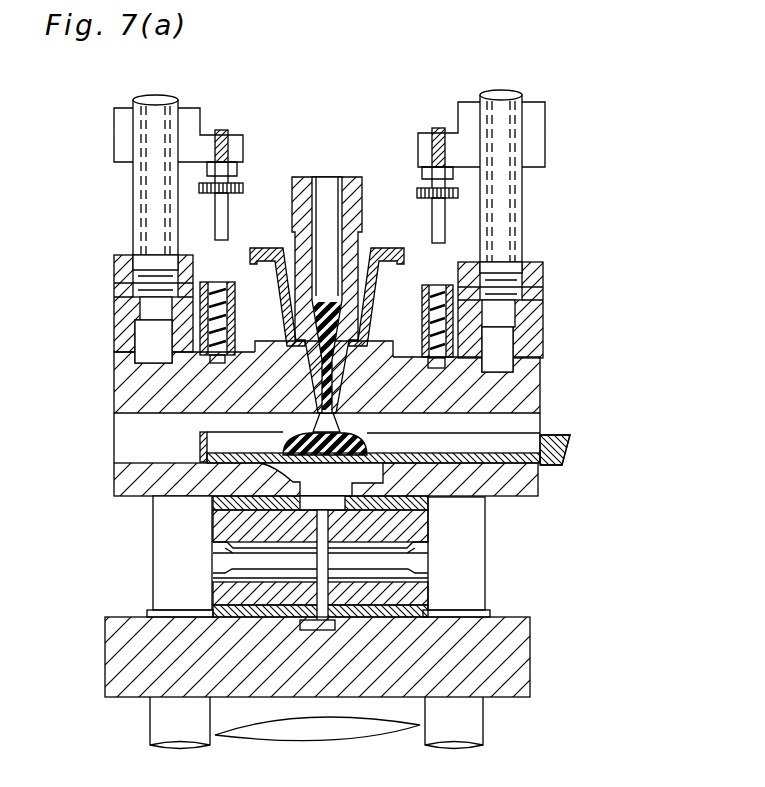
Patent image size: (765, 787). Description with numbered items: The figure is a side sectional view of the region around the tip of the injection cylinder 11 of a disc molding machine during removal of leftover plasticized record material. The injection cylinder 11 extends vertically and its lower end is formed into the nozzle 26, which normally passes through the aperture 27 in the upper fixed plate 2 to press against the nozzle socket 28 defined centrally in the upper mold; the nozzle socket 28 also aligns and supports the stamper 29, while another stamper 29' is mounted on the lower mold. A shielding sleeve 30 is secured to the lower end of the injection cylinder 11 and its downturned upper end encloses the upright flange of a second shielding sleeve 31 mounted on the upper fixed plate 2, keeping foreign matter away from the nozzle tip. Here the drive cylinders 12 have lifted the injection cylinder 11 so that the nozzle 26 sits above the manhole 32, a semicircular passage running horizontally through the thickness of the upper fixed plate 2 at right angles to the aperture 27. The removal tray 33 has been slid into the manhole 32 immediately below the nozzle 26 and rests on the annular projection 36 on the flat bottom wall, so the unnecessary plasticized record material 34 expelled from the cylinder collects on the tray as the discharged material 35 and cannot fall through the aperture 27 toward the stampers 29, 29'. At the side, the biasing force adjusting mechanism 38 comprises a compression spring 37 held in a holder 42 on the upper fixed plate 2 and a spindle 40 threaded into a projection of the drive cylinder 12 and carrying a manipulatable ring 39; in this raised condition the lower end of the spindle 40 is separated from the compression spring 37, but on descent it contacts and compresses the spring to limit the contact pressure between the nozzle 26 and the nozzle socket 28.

The upper fixed plate 2 is at (533, 377).
The injection cylinder 11 is at (360, 236).
The drive cylinder 12 is at (537, 137).
The injection nozzle 26 is at (352, 407).
The aperture 27 is at (280, 378).
The nozzle socket 28 is at (330, 528).
The stamper 29 is at (425, 570).
The stamper 29' is at (429, 602).
The shielding sleeve 30 is at (378, 287).
The shielding sleeve 31 is at (548, 317).
The manhole 32 is at (530, 427).
The removal tray 33 is at (565, 455).
The unnecessary plasticized record material 34 is at (345, 403).
The unnecessary plasticized record material 35 is at (200, 443).
The annular projection 36 is at (230, 478).
The compression spring 37 is at (203, 295).
The biasing force adjusting mechanism 38 is at (213, 217).
The manipulatable ring 39 is at (199, 188).
The spindle 40 is at (225, 130).
The holder 42 is at (203, 322).